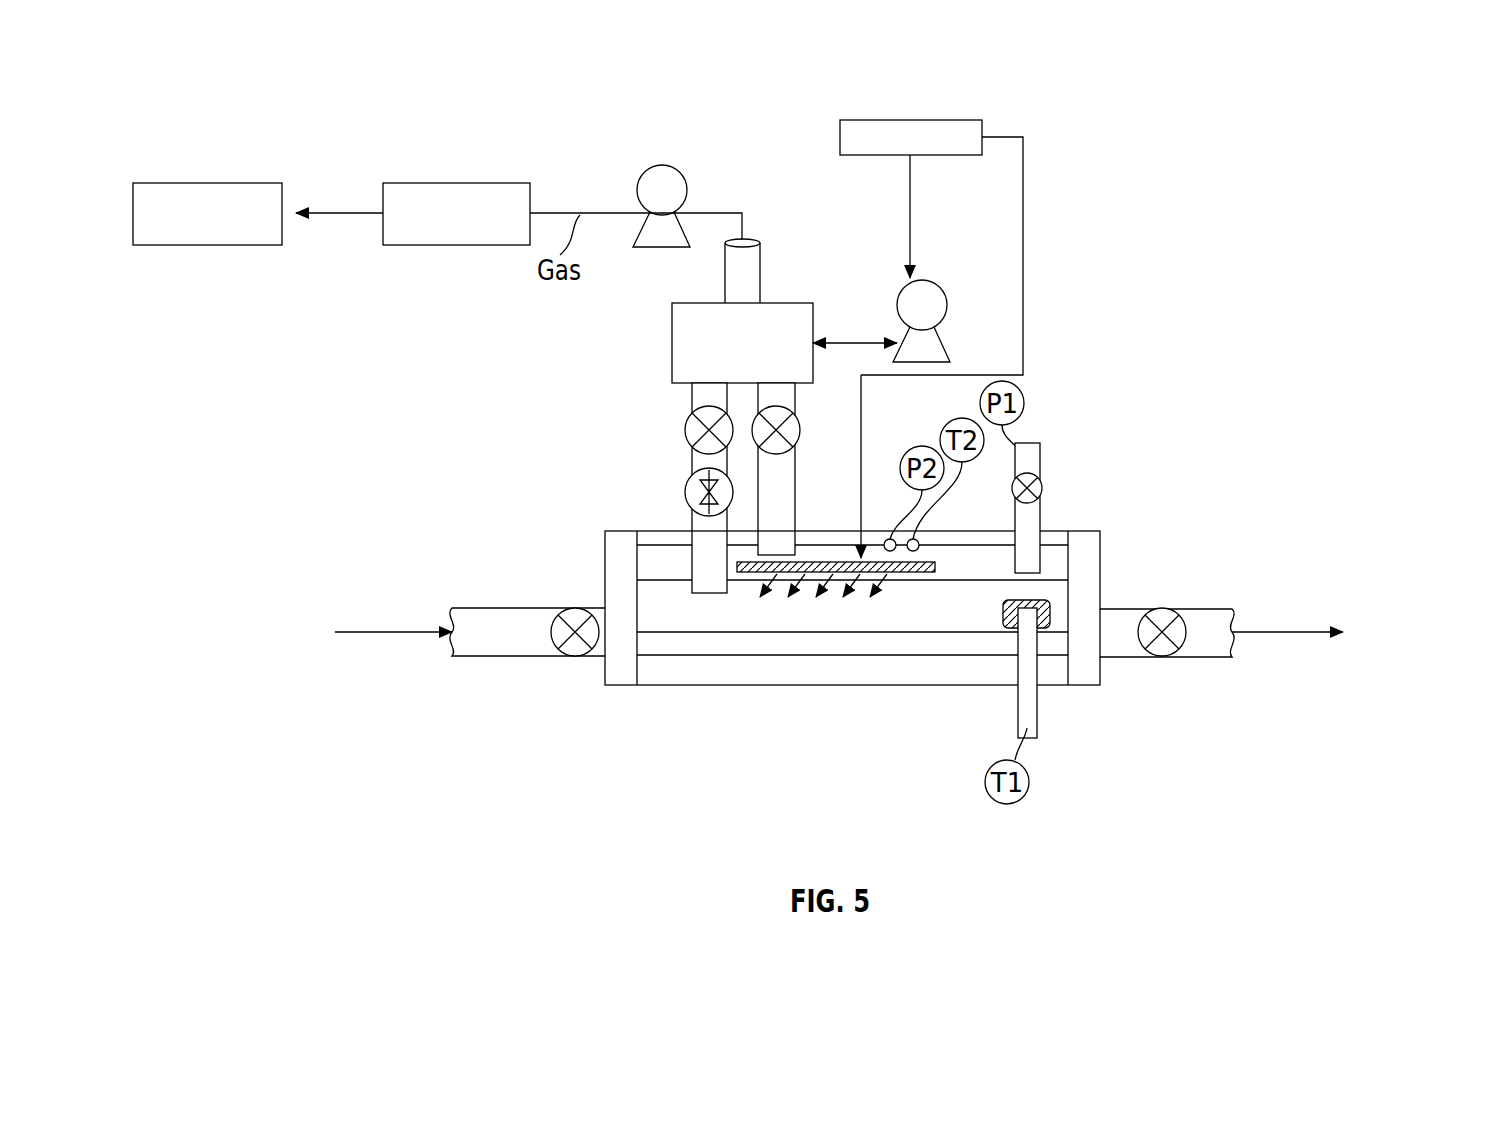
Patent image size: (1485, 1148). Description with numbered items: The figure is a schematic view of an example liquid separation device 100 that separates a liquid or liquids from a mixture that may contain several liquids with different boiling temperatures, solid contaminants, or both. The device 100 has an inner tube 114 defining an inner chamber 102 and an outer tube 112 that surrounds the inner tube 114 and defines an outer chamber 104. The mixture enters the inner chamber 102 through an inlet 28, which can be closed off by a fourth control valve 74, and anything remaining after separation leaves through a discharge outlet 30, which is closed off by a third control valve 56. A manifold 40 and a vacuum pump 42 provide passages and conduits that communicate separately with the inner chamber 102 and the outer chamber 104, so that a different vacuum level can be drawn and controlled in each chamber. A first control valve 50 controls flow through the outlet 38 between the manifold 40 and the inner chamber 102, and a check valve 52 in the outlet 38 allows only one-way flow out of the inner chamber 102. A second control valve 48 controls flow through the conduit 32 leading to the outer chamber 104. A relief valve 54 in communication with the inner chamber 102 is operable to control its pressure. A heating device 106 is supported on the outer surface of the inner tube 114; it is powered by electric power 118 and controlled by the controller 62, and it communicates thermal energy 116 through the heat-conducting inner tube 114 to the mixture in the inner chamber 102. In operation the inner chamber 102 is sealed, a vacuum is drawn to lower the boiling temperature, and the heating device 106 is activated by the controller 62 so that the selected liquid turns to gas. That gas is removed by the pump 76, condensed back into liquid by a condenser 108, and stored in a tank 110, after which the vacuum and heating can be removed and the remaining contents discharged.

The liquid separation device 100 is at (1378, 150).
The tank 110 is at (170, 183).
The condenser 108 is at (420, 183).
The pump 76 is at (644, 173).
The controller 62 is at (896, 120).
The manifold 40 is at (672, 332).
The vacuum pump 42 is at (938, 300).
The outlet 38 is at (699, 462).
The first control valve 50 is at (686, 431).
The check valve 52 is at (686, 496).
The conduit 32 is at (784, 491).
The second control valve 48 is at (793, 413).
The outer chamber 104 is at (686, 648).
The heating device 106 is at (930, 577).
The inner tube 114 is at (768, 635).
The outer tube 112 is at (950, 675).
The inner chamber 102 is at (857, 607).
The thermal energy 116 is at (750, 600).
The electric power 118 is at (863, 428).
The relief valve 54 is at (1043, 489).
The inlet 28 is at (483, 650).
The fourth control valve 74 is at (576, 648).
The discharge outlet 30 is at (1113, 620).
The third control valve 56 is at (1160, 607).